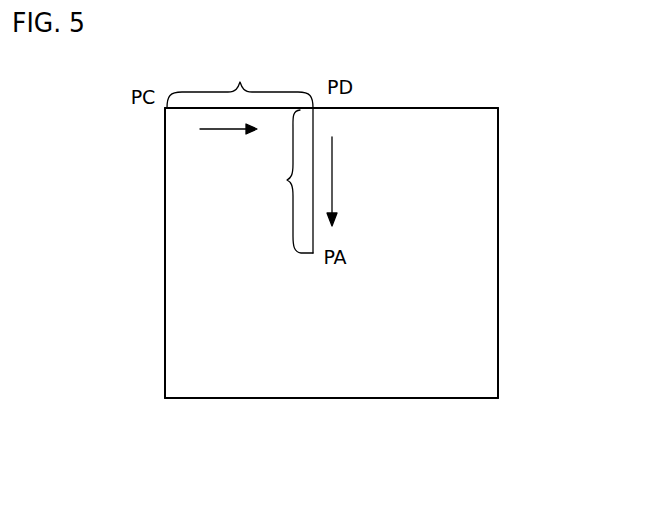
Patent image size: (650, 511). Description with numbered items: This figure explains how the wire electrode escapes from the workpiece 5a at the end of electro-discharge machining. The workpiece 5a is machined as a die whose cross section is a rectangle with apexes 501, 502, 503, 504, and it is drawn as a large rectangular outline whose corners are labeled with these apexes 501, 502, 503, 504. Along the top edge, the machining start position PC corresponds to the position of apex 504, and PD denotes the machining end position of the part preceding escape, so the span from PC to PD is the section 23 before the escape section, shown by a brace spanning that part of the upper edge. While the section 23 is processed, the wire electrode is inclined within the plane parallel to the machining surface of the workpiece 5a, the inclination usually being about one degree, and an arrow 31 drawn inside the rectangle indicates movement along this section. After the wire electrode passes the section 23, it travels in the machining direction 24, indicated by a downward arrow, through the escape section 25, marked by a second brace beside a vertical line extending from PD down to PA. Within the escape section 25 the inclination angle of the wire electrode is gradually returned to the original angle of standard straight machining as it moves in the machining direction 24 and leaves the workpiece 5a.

The workpiece 5a is at (298, 256).
The apex 501 is at (498, 108).
The apex 502 is at (483, 398).
The apex 503 is at (165, 398).
The apex 504 is at (165, 108).
The section before the escape section 23 is at (240, 81).
The escape section 25 is at (282, 181).
The direction arrow (machining direction in section before escape) 31 is at (215, 130).
The machining direction 24 is at (332, 198).